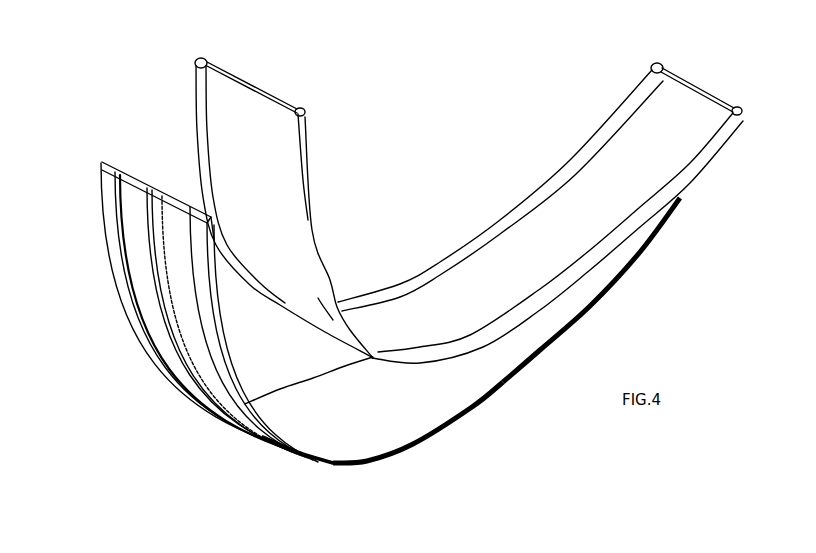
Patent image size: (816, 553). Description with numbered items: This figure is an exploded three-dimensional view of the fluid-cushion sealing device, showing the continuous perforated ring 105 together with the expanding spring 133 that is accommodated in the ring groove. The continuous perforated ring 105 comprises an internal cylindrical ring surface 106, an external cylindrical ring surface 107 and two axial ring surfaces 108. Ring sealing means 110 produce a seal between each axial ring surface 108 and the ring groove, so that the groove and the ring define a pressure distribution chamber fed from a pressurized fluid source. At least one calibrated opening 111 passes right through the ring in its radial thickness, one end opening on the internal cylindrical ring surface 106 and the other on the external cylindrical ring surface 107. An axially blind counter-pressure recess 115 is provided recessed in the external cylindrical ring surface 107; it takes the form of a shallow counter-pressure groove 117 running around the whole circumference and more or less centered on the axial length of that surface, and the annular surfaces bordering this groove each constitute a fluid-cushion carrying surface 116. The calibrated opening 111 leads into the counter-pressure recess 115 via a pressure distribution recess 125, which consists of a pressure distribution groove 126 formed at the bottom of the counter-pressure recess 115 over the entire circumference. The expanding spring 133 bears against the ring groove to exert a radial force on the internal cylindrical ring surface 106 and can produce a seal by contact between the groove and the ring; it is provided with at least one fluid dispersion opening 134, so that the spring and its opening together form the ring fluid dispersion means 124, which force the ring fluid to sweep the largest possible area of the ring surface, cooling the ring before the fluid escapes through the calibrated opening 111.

The continuous perforated ring 105 is at (504, 383).
The internal cylindrical ring surface 106 is at (390, 408).
The external cylindrical ring surface 107 is at (223, 424).
The axial ring surface 108 is at (302, 451).
The ring sealing means 110 is at (675, 121).
The calibrated opening 111 is at (300, 424).
The counter-pressure recess 115 is at (138, 197).
The fluid-cushion carrying surface 116 is at (110, 257).
The counter-pressure groove 117 is at (134, 213).
The ring fluid dispersion means 124 is at (509, 270).
The pressure distribution recess 125 is at (160, 298).
The pressure distribution groove 126 is at (175, 327).
The expanding spring 133 is at (580, 210).
The fluid dispersion opening 134 is at (198, 93).